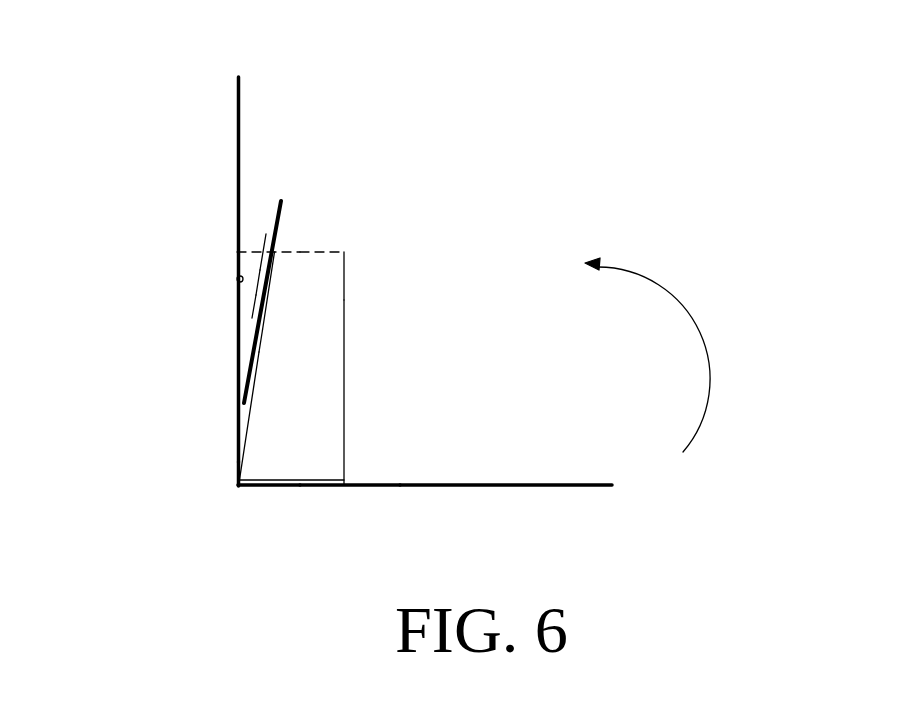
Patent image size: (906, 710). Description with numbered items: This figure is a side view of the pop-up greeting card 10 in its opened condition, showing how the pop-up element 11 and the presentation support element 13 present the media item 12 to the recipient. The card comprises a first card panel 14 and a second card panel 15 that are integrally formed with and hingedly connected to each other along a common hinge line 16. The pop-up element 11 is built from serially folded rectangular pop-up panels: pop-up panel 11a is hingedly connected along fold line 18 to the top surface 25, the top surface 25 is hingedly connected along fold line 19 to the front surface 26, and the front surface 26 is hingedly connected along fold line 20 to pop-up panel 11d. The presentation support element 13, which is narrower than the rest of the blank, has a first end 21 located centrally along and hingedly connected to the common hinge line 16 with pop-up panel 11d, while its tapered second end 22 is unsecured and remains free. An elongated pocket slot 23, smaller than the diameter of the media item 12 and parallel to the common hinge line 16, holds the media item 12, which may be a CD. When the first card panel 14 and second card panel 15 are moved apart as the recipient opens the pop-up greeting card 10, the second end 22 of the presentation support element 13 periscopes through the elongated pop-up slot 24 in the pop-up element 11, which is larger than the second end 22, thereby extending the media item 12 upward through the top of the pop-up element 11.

The pop-up greeting card 10 is at (206, 354).
The pop-up element 11 is at (345, 391).
The pop-up panel 11a is at (251, 302).
The pop-up panel 11d is at (317, 490).
The media item 12 is at (282, 203).
The presentation support element 13 is at (254, 318).
The first card panel 14 is at (238, 77).
The second card panel 15 is at (548, 488).
The common hinge line 16 is at (237, 486).
The fold line 18 is at (237, 250).
The fold line 19 is at (344, 252).
The fold line 20 is at (348, 490).
The first end 21 is at (247, 490).
The tapered second end 22 is at (265, 242).
The elongated pocket slot 23 is at (257, 330).
The elongated pop-up slot 24 is at (268, 258).
The top surface 25 is at (315, 252).
The front surface 26 is at (344, 266).